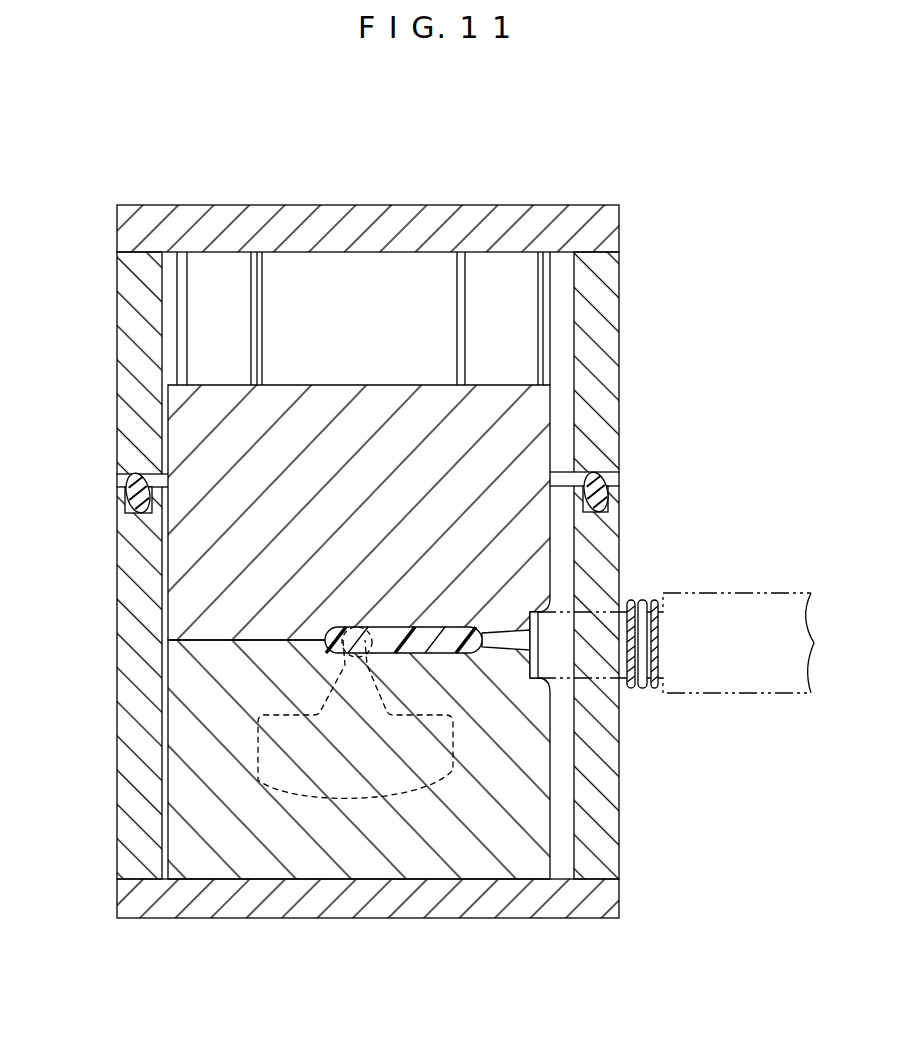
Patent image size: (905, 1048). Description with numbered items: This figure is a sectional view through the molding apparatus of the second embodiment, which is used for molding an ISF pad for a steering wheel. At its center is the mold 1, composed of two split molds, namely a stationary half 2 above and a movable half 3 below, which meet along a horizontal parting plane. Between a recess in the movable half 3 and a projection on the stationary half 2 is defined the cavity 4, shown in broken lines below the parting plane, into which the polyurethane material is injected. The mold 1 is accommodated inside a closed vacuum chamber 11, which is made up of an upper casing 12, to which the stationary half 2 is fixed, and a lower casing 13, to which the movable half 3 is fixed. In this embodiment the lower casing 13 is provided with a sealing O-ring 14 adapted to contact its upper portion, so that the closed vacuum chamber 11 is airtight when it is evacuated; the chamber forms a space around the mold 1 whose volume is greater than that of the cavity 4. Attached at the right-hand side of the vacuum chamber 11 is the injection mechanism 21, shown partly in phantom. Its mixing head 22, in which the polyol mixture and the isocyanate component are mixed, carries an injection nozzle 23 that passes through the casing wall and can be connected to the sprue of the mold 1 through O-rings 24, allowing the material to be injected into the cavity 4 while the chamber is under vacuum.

The mold 1 is at (50, 543).
The stationary half 2 is at (190, 587).
The movable half 3 is at (190, 698).
The cavity 4 is at (357, 810).
The vacuum chamber 11 is at (576, 198).
The upper casing 12 is at (610, 316).
The lower casing 13 is at (608, 820).
The sealing O-ring 14 is at (600, 484).
The injection mechanism 21 is at (763, 700).
The mixing head 22 is at (761, 593).
The injection nozzle 23 is at (619, 700).
The O-rings 24 is at (655, 600).